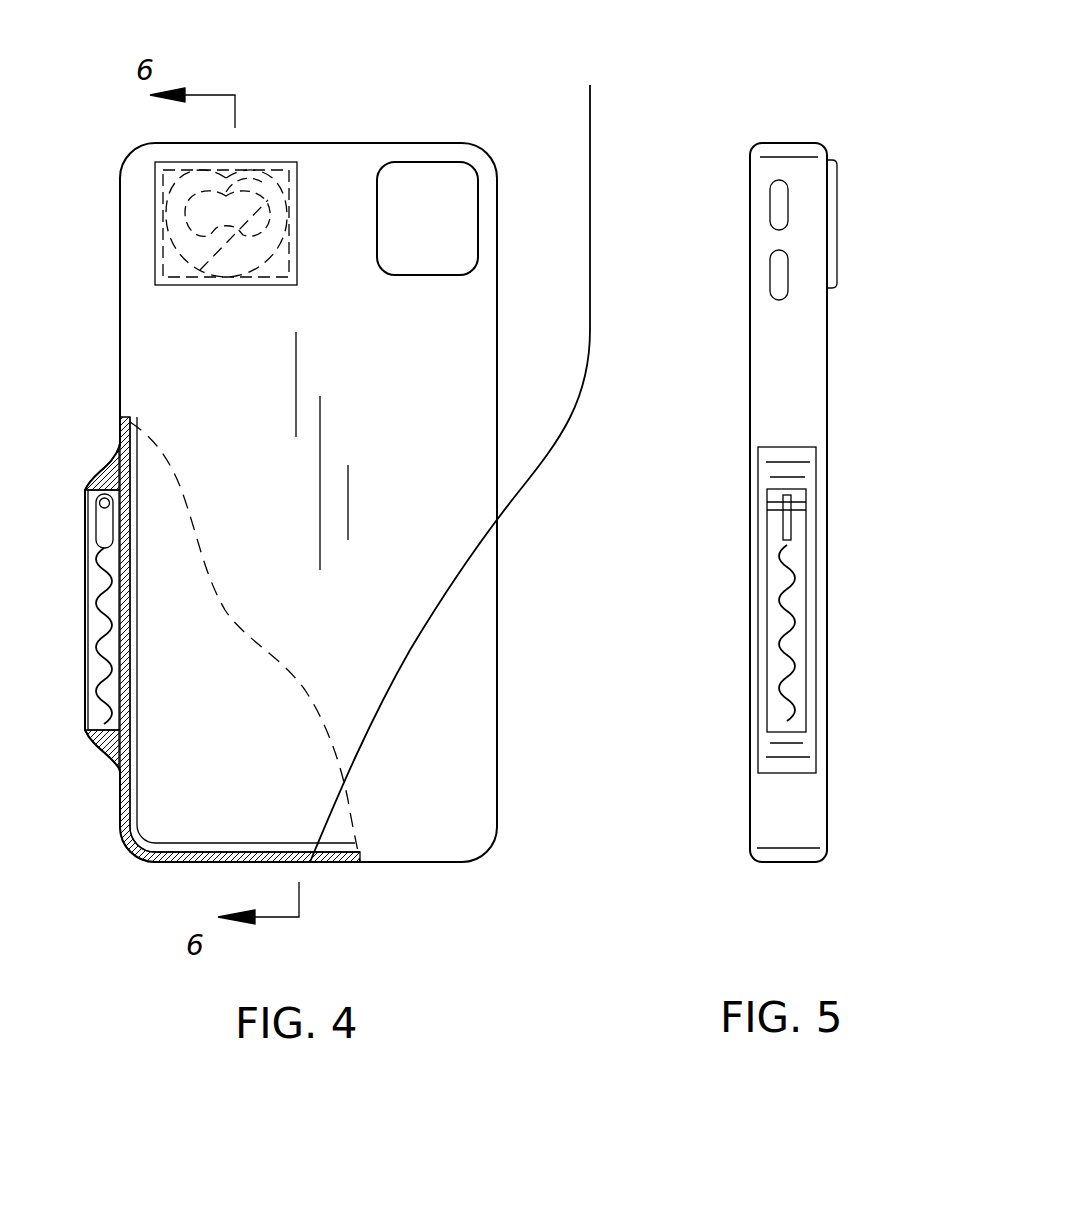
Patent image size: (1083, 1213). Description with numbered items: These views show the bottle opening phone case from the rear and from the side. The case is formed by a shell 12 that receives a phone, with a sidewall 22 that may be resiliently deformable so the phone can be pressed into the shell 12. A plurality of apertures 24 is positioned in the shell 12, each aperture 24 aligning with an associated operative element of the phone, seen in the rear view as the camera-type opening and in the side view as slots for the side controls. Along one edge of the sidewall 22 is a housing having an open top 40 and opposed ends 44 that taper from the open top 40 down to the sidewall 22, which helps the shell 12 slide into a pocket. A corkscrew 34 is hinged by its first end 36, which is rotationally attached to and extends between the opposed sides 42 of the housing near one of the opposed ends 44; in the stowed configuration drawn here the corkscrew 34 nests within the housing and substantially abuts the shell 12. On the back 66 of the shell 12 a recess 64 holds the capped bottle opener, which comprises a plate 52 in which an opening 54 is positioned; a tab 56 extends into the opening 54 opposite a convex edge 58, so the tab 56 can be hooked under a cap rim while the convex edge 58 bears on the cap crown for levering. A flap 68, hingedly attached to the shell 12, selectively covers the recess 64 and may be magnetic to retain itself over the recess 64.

In FIG. 4, the shell 12 is at (485, 152).
In FIG. 5, the shell 12 is at (750, 812).
In FIG. 5, the sidewall 22 is at (786, 352).
In FIG. 4, the apertures 24 is at (445, 220).
In FIG. 5, the apertures 24 is at (777, 200).
In FIG. 4, the corkscrew 34 is at (98, 590).
In FIG. 5, the corkscrew 34 is at (790, 580).
In FIG. 4, the first end 36 is at (100, 503).
In FIG. 5, the first end 36 is at (800, 495).
In FIG. 4, the open top 40 is at (88, 672).
In FIG. 5, the opposed sides 42 is at (800, 632).
In FIG. 5, the opposed ends 44 is at (780, 462).
In FIG. 4, the plate 52 is at (163, 213).
In FIG. 4, the opening 54 is at (165, 265).
In FIG. 4, the tab 56 is at (267, 227).
In FIG. 4, the convex edge 58 is at (232, 192).
In FIG. 4, the recess 64 is at (270, 267).
In FIG. 4, the back 66 is at (450, 768).
In FIG. 5, the flap 68 is at (838, 222).